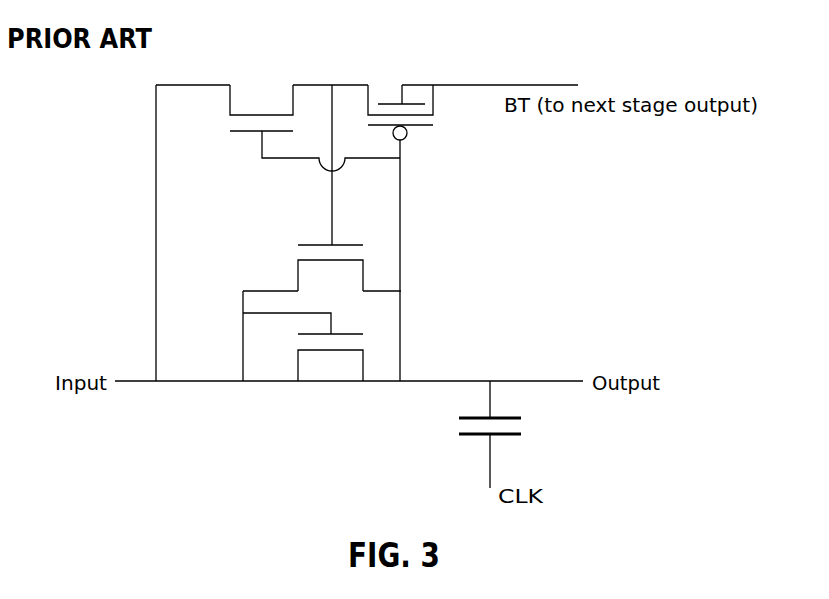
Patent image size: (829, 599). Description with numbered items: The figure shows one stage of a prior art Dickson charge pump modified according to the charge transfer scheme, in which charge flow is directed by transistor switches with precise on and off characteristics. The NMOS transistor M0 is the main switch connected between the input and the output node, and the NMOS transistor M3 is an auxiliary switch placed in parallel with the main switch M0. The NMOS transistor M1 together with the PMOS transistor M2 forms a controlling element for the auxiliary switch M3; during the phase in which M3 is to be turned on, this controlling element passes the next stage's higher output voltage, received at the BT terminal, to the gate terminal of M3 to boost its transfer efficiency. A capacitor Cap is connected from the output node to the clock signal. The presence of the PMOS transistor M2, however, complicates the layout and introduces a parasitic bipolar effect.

The NMOS transistor M1 is at (315, 124).
The PMOS transistor M2 is at (407, 233).
The auxiliary switch M3 is at (326, 256).
The main switch M0 is at (303, 354).
The capacitor Cap is at (464, 434).